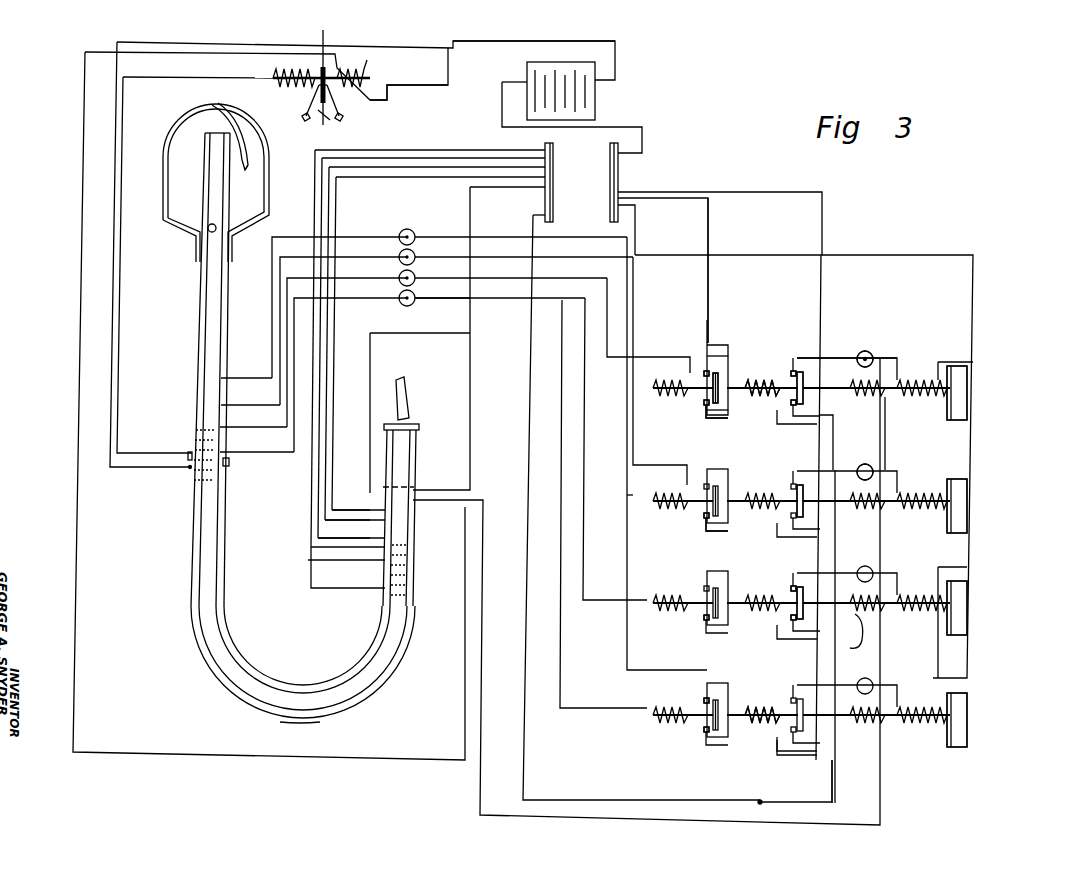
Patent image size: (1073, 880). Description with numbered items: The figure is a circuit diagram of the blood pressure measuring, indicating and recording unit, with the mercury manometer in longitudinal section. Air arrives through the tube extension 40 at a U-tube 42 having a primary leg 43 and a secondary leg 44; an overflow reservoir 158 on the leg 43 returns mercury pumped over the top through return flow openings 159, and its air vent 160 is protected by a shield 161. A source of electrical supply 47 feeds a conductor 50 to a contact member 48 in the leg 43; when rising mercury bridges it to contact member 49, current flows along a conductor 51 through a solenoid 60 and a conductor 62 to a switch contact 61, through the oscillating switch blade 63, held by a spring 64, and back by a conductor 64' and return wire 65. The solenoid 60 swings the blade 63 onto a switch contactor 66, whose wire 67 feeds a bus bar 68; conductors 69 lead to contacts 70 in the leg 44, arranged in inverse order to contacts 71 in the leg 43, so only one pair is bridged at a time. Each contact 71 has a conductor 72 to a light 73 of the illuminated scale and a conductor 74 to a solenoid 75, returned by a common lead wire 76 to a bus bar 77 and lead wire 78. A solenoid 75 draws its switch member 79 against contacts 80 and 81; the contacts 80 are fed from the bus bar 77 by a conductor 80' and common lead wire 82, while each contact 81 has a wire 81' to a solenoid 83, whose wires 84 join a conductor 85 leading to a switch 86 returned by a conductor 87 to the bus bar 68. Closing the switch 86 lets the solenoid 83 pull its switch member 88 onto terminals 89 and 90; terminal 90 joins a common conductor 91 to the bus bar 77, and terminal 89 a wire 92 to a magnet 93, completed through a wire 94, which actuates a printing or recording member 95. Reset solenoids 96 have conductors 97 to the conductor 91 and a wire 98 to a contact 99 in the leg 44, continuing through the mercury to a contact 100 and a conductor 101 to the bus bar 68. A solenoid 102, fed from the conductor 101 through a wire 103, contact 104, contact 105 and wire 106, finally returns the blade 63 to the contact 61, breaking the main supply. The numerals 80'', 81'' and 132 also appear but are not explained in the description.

The tube extension 40 is at (410, 388).
The U-tube 42 is at (283, 688).
The primary vertical leg 43 is at (190, 622).
The secondary vertical leg 44 is at (396, 668).
The source of electrical supply 47 is at (590, 72).
The contact member 48 is at (230, 463).
The contact member 49 is at (190, 452).
The conductor 50 is at (110, 467).
The conductor 51 is at (121, 312).
The solenoid 60 is at (270, 70).
The switch contact 61 is at (303, 117).
The conductor 62 is at (312, 92).
The oscillating switch blade 63 is at (324, 112).
The spring 64 is at (307, 72).
The conductor 64' is at (409, 97).
The return wire 65 is at (616, 78).
The switch contactor 66 is at (345, 118).
The wire 67 is at (478, 150).
The bus bar 68 is at (553, 143).
The conductors 69 is at (400, 178).
The contacts 70 is at (375, 532).
The contacts 71 is at (224, 378).
The conductors 72 is at (278, 290).
The lights 73 is at (402, 230).
The conductors 74 is at (473, 300).
The solenoids 75 is at (672, 392).
The common lead wire 76 is at (636, 230).
The bus bar 77 is at (618, 178).
The lead wire 78 is at (643, 140).
The switch member 79 is at (720, 372).
The contacts 80 is at (679, 509).
The conductor 80' is at (727, 270).
The contact 80'' is at (692, 750).
The contacts 81 is at (691, 519).
The wires 81' is at (761, 510).
The spring 81'' is at (746, 745).
The common lead wire 82 is at (720, 420).
The solenoids 83 is at (775, 596).
The wires 84 is at (775, 530).
The conductor 85 is at (838, 422).
The switch 86 is at (766, 795).
The conductor 87 is at (526, 775).
The switch member 88 is at (805, 370).
The terminal 89 is at (793, 370).
The terminal 90 is at (792, 406).
The conductor 91 is at (823, 233).
The wire 92 is at (867, 350).
The magnet 93 is at (912, 370).
The wire 94 is at (973, 288).
The printing or recording member 95 is at (950, 530).
The solenoids 96 is at (852, 635).
The conductors 97 is at (830, 385).
The wire 98 is at (480, 785).
The contact 99 is at (417, 520).
The contact 100 is at (370, 520).
The conductor 101 is at (471, 215).
The solenoid 102 is at (362, 50).
The wire 103 is at (471, 428).
The contact 104 is at (370, 508).
The contact 105 is at (414, 487).
The wire 106 is at (80, 273).
The lamp 132 is at (872, 357).
The overflow reservoir 158 is at (167, 115).
The return flow openings 159 is at (230, 225).
The air vent 160 is at (250, 168).
The shield 161 is at (226, 112).